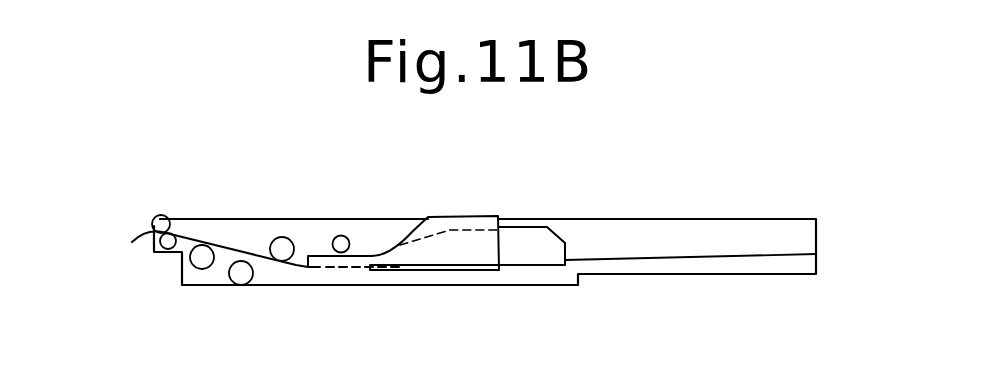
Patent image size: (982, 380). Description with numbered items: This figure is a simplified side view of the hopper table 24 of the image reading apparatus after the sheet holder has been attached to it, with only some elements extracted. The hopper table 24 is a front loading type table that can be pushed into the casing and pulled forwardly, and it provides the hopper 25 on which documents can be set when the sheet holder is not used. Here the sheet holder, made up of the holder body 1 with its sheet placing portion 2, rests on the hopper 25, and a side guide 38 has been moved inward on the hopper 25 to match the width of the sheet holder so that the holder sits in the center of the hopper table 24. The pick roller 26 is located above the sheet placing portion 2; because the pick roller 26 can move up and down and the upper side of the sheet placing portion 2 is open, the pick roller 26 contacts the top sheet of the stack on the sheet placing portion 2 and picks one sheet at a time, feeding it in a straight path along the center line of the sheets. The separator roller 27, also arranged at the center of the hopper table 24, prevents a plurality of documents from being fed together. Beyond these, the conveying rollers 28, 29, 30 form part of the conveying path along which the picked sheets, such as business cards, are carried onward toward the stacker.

The holder body 1 is at (462, 222).
The sheet placing portion 2 is at (362, 254).
The hopper table 24 is at (773, 219).
The hopper 25 is at (683, 257).
The pick roller 26 is at (340, 236).
The separator roller 27 is at (282, 237).
The conveying roller 28 is at (238, 277).
The conveying roller 29 is at (200, 264).
The conveying roller 30 is at (162, 253).
The side guide 38 is at (528, 238).